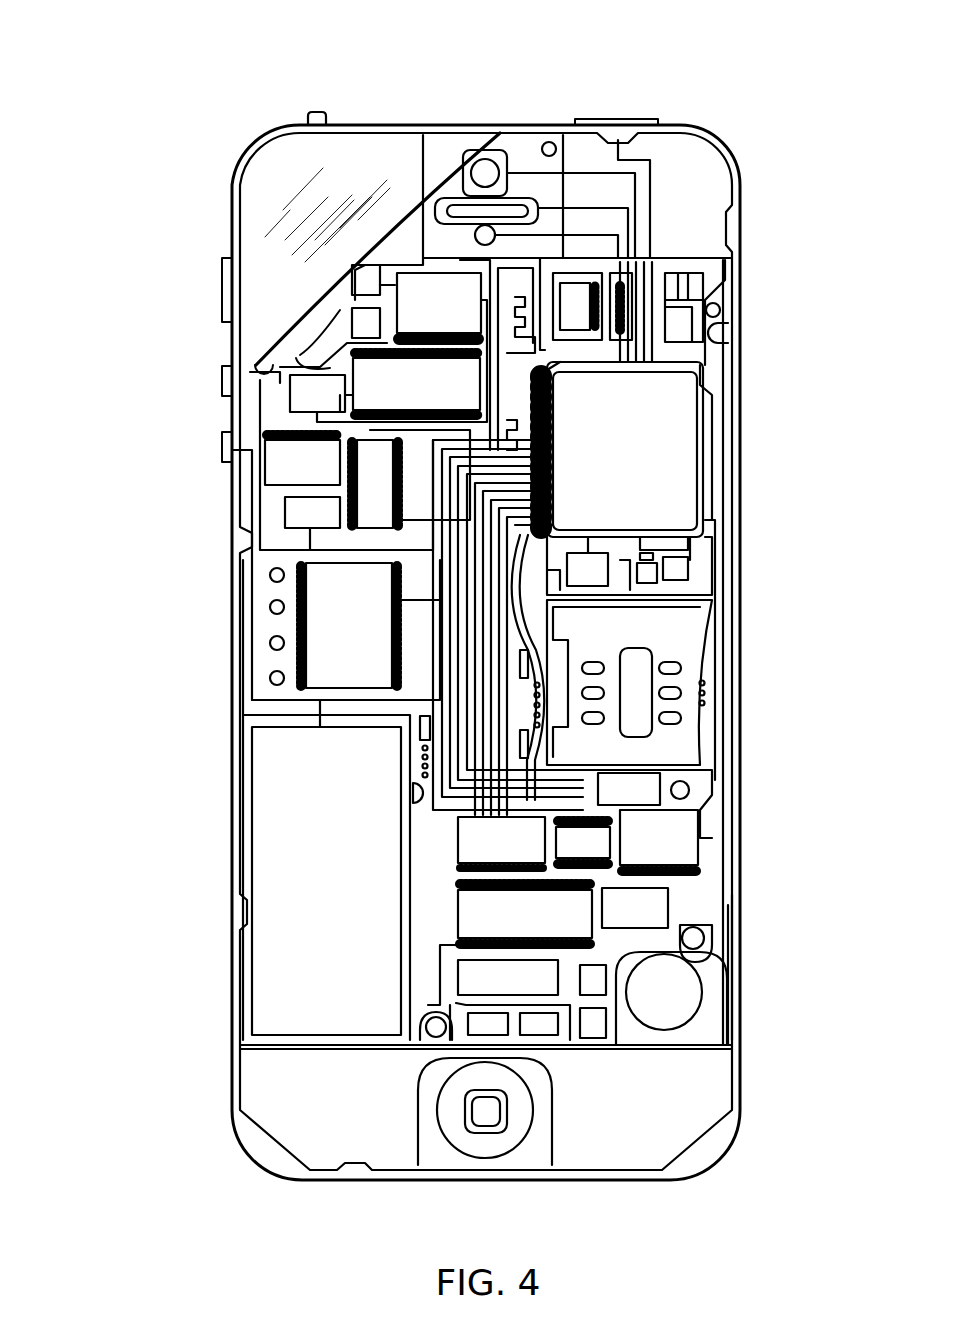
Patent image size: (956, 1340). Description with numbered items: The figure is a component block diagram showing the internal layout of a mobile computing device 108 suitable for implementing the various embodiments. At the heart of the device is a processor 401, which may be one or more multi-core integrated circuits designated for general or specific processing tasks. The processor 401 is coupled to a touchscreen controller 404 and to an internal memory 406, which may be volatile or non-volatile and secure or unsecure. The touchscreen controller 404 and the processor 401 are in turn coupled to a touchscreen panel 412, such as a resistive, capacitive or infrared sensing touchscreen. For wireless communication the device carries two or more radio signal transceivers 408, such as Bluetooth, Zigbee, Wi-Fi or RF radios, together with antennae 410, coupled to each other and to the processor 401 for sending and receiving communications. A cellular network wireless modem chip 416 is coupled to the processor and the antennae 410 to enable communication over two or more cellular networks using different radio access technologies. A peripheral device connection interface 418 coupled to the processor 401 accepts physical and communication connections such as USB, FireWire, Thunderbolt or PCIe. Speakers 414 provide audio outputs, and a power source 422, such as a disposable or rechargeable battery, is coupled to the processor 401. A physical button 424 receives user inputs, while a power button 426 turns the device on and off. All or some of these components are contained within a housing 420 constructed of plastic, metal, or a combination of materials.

The mobile computing device 108 is at (65, 72).
The processor 401 is at (628, 521).
The touchscreen controller 404 is at (416, 302).
The internal memory 406 is at (385, 384).
The radio signal transceivers 408 is at (643, 285).
The antennae 410 is at (693, 323).
The touchscreen panel 412 is at (268, 212).
The speakers 414 is at (442, 202).
The cellular network wireless modem chip 416 is at (525, 914).
The peripheral device connection interface 418 is at (508, 977).
The housing 420 is at (741, 1067).
The power source 422 is at (326, 881).
The physical button 424 is at (492, 1118).
The power button 426 is at (615, 120).